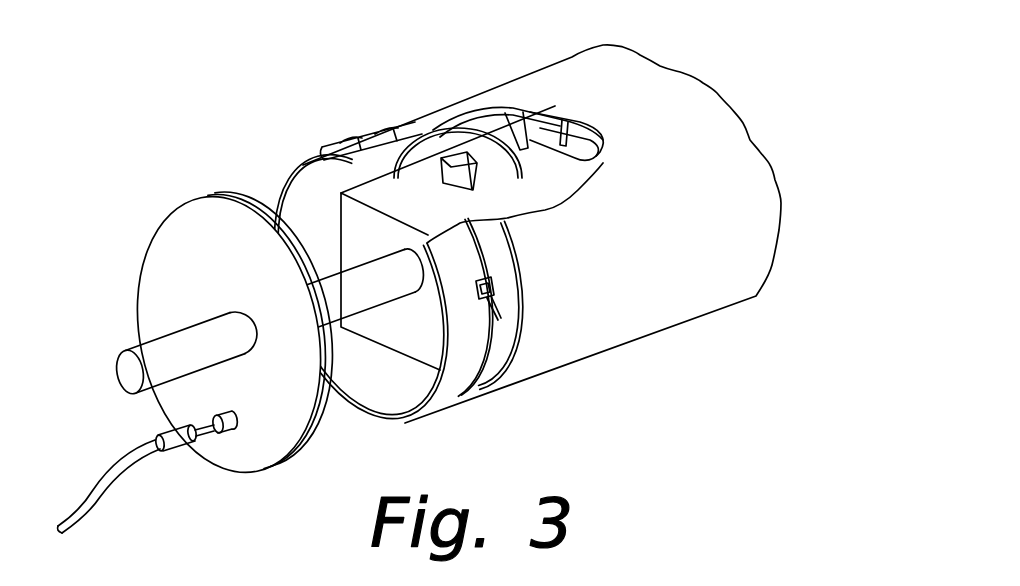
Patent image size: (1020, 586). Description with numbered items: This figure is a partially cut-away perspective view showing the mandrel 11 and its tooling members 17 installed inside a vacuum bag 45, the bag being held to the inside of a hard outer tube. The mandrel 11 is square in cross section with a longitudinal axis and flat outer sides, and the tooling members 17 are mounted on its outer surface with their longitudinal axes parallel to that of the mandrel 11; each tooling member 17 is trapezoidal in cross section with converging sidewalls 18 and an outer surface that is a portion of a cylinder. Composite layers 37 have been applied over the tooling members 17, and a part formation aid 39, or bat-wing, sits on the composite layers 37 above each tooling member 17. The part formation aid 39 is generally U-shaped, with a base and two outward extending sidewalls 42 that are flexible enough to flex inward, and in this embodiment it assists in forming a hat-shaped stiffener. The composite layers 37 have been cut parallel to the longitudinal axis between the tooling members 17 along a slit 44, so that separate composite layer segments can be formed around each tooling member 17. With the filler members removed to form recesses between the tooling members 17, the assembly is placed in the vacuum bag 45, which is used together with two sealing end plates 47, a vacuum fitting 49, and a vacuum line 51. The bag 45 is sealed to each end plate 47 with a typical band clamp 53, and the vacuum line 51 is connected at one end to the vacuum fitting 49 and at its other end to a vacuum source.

The mandrel 11 is at (340, 214).
The tooling member 17 is at (445, 165).
The sidewall 18 is at (490, 177).
The composite layers 37 is at (583, 131).
The part formation aid 39 is at (487, 122).
The sidewall 42 is at (537, 122).
The slit 44 is at (590, 146).
The vacuum bag 45 is at (567, 58).
The sealing end plate 47 is at (143, 262).
The vacuum fitting 49 is at (177, 450).
The vacuum line 51 is at (87, 517).
The band clamp 53 is at (480, 388).